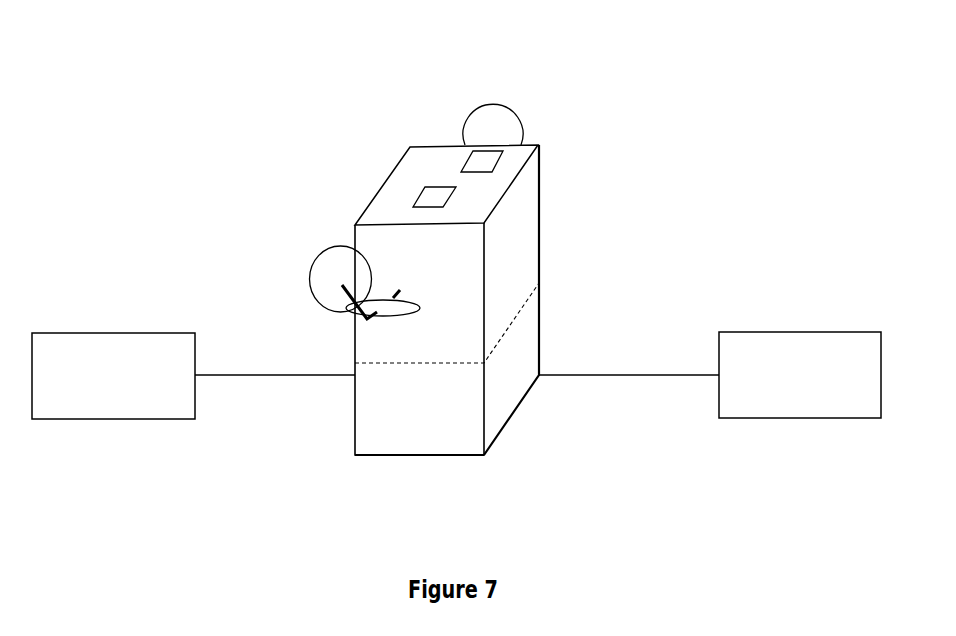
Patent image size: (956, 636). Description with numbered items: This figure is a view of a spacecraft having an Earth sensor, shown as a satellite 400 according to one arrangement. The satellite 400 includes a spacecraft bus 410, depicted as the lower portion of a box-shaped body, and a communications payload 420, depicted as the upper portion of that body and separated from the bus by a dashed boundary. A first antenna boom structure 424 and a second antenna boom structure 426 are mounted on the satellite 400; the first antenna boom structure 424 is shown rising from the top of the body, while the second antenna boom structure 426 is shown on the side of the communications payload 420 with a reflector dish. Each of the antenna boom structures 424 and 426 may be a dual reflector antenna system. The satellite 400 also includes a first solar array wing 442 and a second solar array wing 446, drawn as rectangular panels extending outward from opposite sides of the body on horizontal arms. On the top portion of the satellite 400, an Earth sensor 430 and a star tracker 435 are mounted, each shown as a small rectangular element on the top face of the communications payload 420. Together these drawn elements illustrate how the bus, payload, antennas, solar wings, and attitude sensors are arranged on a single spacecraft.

The satellite 400 is at (252, 82).
The spacecraft bus 410 is at (362, 420).
The communications payload 420 is at (378, 237).
The first antenna boom structure 424 is at (480, 97).
The second antenna boom structure 426 is at (285, 265).
The Earth sensor 430 is at (437, 187).
The star tracker 435 is at (497, 163).
The first solar array wing 442 is at (113, 420).
The second solar array wing 446 is at (802, 418).